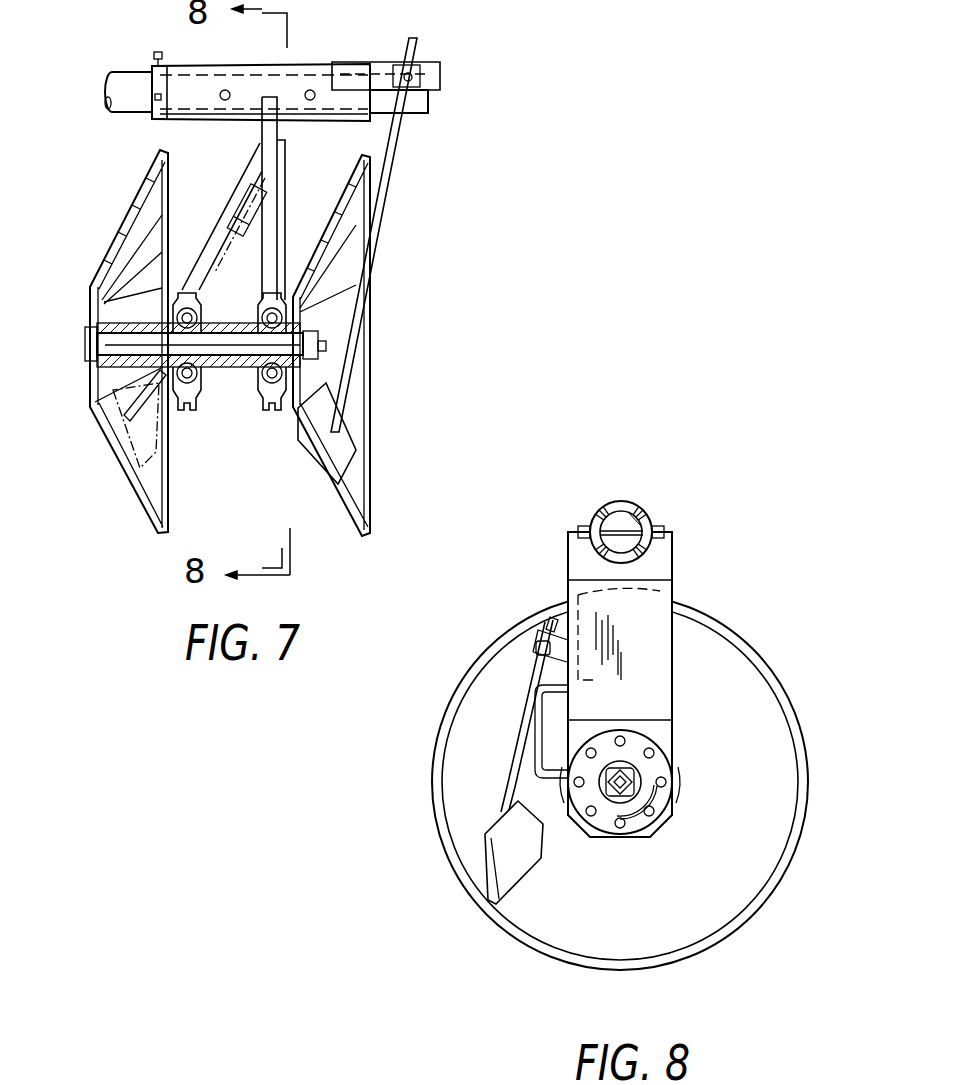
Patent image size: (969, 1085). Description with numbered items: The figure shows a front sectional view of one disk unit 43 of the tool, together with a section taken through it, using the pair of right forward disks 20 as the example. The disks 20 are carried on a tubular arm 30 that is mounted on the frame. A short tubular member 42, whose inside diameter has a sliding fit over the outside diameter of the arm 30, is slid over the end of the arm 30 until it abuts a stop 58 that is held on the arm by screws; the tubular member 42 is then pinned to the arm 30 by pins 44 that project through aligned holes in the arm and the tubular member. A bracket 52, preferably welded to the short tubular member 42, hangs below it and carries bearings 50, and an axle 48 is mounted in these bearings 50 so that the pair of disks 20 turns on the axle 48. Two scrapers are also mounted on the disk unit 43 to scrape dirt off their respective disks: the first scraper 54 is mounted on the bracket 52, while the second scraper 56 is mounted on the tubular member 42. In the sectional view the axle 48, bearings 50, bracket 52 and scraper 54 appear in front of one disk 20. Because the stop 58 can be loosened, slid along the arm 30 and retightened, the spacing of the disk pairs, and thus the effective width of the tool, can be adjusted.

In FIG. 7, the right forward disks 20 is at (152, 526).
In FIG. 8, the right forward disks 20 is at (797, 711).
In FIG. 7, the arm 30 is at (132, 76).
In FIG. 8, the arm 30 is at (600, 550).
In FIG. 7, the short tubular member 42 is at (193, 104).
In FIG. 8, the short tubular member 42 is at (608, 503).
In FIG. 7, the disk unit 43 is at (408, 312).
In FIG. 7, the pins 44 is at (224, 89).
In FIG. 8, the pins 44 is at (632, 525).
In FIG. 7, the axle 48 is at (88, 338).
In FIG. 8, the axle 48 is at (627, 782).
In FIG. 7, the bearings 50 is at (200, 380).
In FIG. 8, the bearings 50 is at (643, 768).
In FIG. 7, the bracket 52 is at (278, 163).
In FIG. 8, the bracket 52 is at (668, 562).
In FIG. 7, the first scraper 54 is at (167, 430).
In FIG. 8, the first scraper 54 is at (509, 770).
In FIG. 7, the second scraper 56 is at (396, 163).
In FIG. 7, the stop 58 is at (152, 118).